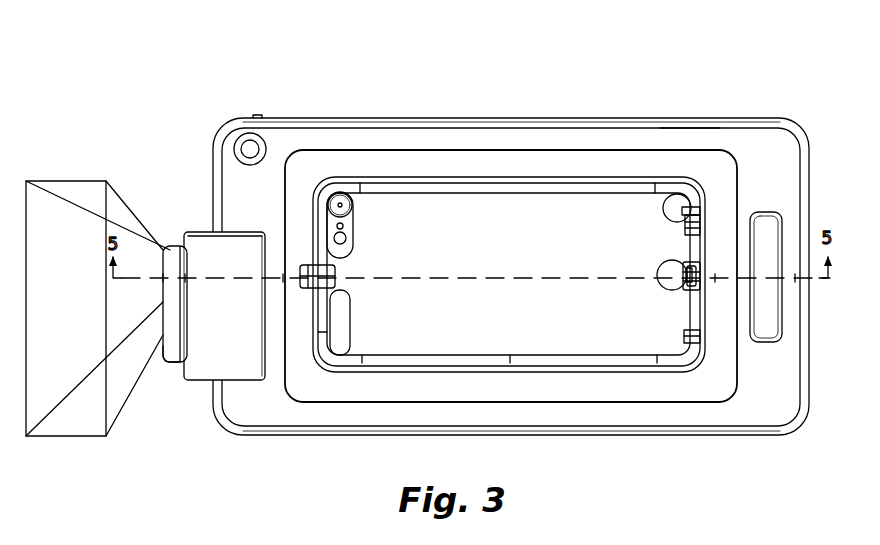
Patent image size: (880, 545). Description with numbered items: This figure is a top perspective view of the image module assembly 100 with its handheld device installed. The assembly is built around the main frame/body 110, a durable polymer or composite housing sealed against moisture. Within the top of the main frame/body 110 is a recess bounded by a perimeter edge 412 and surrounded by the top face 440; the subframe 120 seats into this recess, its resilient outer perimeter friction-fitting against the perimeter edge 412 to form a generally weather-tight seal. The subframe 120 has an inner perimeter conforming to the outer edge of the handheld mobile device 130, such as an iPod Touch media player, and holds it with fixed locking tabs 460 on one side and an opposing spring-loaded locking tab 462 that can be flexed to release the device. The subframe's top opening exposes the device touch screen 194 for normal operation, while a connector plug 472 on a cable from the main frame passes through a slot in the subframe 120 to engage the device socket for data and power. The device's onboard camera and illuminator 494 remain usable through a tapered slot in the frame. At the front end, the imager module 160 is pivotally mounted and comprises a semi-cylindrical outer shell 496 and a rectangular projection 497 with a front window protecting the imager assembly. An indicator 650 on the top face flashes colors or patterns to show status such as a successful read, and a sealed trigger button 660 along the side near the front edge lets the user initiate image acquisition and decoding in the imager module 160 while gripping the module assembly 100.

The image module assembly 100 is at (511, 234).
The main frame/body 110 is at (324, 140).
The subframe 120 is at (410, 158).
The handheld mobile device 130 is at (627, 344).
The imager module 160 is at (203, 252).
The touch screen 194 is at (608, 277).
The perimeter edge 412 is at (500, 149).
The top face 440 is at (690, 137).
The locking tab 460 is at (702, 210).
The spring-loaded locking tab 462 is at (308, 282).
The connector plug 472 is at (700, 275).
The onboard camera and illuminator 494 is at (362, 226).
The semi-cylindrical outer shell 496 is at (212, 363).
The rectangular projection 497 is at (175, 358).
The indicator 650 is at (251, 146).
The trigger button 660 is at (260, 114).